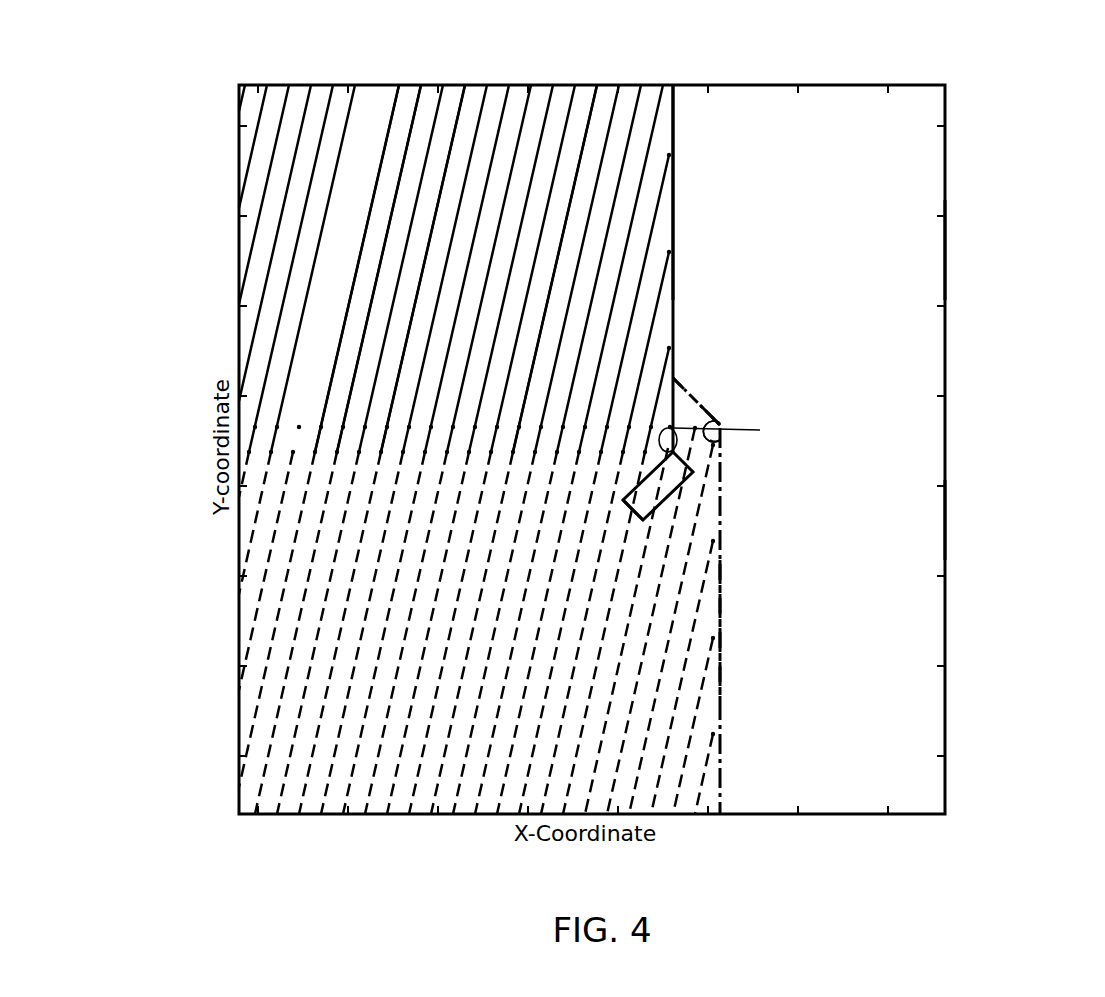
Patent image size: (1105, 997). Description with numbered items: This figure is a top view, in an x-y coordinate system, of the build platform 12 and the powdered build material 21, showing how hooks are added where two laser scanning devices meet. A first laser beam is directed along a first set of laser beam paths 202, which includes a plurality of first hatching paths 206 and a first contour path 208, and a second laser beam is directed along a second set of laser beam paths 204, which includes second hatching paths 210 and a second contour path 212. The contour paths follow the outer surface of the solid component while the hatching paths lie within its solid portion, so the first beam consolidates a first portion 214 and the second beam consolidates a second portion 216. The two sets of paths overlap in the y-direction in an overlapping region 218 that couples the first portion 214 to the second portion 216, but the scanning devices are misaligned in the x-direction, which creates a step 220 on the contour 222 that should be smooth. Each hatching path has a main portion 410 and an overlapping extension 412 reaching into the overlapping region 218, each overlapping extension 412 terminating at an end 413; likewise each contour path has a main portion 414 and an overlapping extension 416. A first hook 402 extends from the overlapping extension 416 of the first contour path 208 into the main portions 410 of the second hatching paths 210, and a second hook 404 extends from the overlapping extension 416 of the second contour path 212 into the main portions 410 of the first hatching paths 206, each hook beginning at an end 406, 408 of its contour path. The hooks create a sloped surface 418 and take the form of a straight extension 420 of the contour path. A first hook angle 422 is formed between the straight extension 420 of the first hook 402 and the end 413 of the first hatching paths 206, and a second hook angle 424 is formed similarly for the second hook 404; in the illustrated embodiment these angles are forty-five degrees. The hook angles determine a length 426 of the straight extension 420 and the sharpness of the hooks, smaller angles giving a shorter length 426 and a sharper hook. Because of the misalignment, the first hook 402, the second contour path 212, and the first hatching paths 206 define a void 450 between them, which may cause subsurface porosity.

The build platform 12 is at (746, 382).
The powdered build material 21 is at (367, 247).
The first set of laser beam paths 202 is at (358, 620).
The second set of laser beam paths 204 is at (440, 140).
The first hatching paths 206 is at (381, 718).
The first contour path 208 is at (713, 615).
The second hatching paths 210 is at (354, 330).
The second contour path 212 is at (677, 190).
The first portion 214 is at (321, 548).
The second portion 216 is at (336, 401).
The overlapping region 218 is at (388, 434).
The step 220 is at (721, 423).
The contour 222 is at (738, 514).
The first hook 402 is at (785, 250).
The second hook 404 is at (673, 453).
The end of first contour path 406 is at (727, 432).
The end of second contour path 408 is at (722, 446).
The main portion 410 is at (578, 151).
The overlapping extension 412 is at (272, 432).
The end 413 is at (517, 418).
The main portion 414 is at (677, 122).
The overlapping extension 416 is at (760, 430).
The sloped surface 418 is at (697, 397).
The straight extension 420 is at (710, 415).
The first hook angle 422 is at (730, 414).
The second hook angle 424 is at (660, 447).
The length 426 is at (657, 507).
The void 450 is at (684, 385).